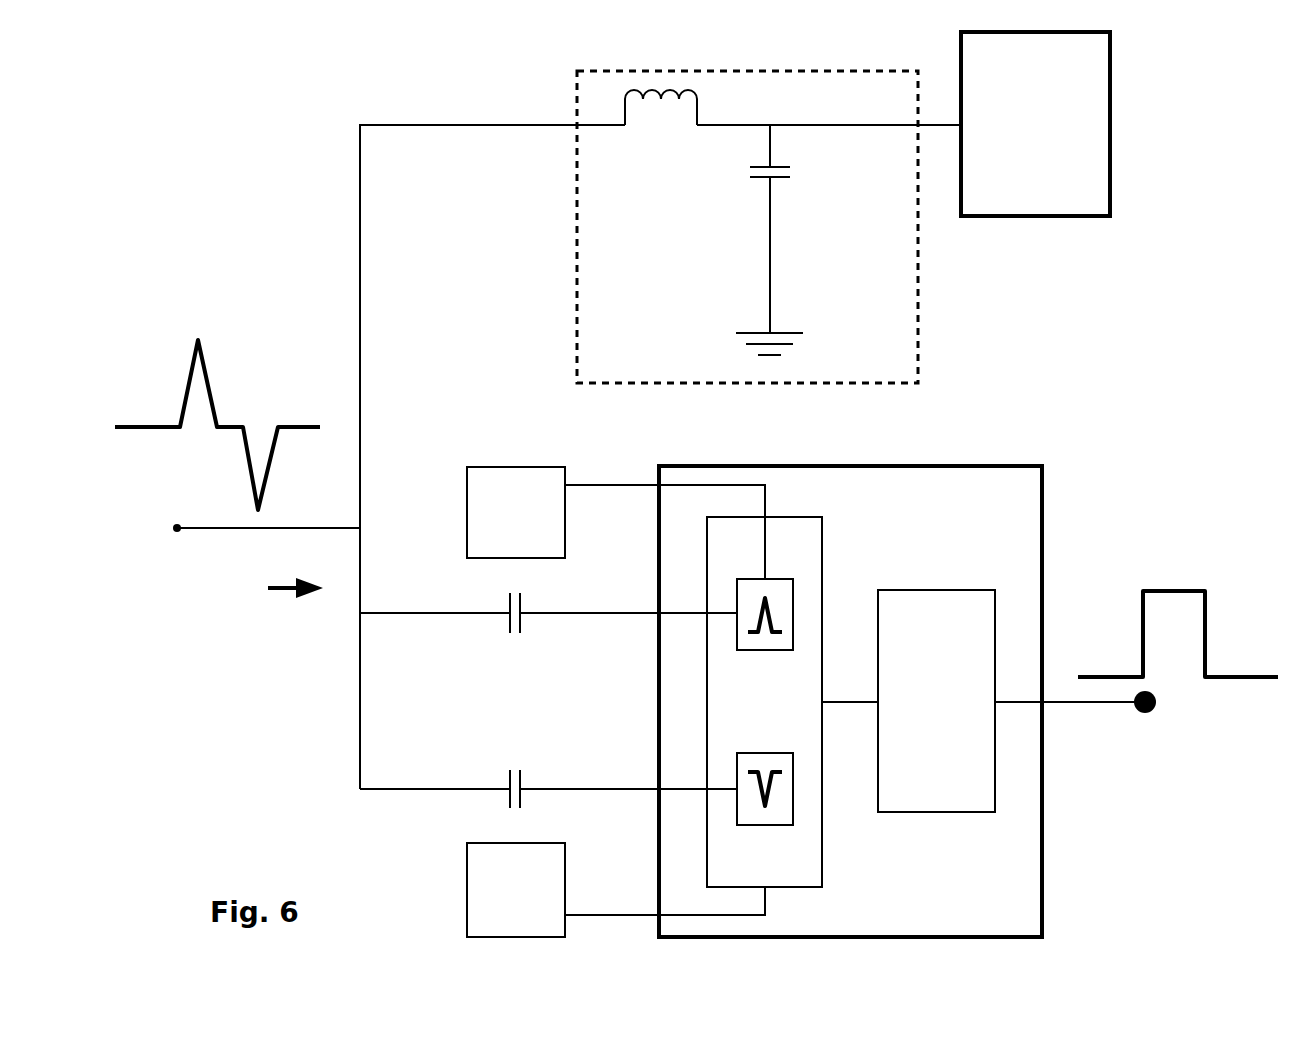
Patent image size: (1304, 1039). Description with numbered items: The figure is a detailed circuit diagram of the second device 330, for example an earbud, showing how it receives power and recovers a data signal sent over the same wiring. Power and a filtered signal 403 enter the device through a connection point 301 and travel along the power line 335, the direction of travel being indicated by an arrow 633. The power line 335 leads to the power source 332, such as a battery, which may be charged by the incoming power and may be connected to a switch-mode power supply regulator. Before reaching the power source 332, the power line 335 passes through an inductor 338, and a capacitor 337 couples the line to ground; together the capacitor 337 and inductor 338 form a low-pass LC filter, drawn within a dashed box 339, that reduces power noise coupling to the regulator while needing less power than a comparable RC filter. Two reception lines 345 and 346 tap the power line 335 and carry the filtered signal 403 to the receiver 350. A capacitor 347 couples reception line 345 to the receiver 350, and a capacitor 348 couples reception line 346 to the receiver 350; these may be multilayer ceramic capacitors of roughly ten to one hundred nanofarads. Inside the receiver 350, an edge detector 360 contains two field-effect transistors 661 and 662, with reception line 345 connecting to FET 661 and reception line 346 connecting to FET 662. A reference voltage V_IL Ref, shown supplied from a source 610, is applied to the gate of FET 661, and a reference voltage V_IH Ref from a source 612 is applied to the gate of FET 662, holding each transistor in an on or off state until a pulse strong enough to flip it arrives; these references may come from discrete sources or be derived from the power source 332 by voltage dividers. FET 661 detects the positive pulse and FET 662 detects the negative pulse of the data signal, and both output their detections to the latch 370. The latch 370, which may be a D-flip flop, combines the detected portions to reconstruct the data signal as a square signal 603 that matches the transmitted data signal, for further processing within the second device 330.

The second device 330 is at (386, 103).
The power line 335 is at (362, 340).
The dashed box 339 is at (757, 71).
The inductor 338 is at (625, 105).
The capacitor 337 is at (792, 170).
The power source 332 is at (1035, 124).
The filtered signal 403 is at (185, 382).
The connection point 301 is at (172, 532).
The signal direction arrow 633 is at (275, 582).
The receiver 350 is at (690, 465).
The low reference voltage source 610 is at (616, 523).
The high reference voltage source 612 is at (616, 890).
The reception line 345 is at (600, 618).
The capacitor 347 is at (505, 630).
The reception line 346 is at (600, 792).
The capacitor 348 is at (508, 772).
The edge detector 360 is at (792, 702).
The field-effect transistor 661 is at (768, 578).
The field-effect transistor 662 is at (770, 828).
The latch 370 is at (1011, 701).
The square signal 603 is at (1168, 590).